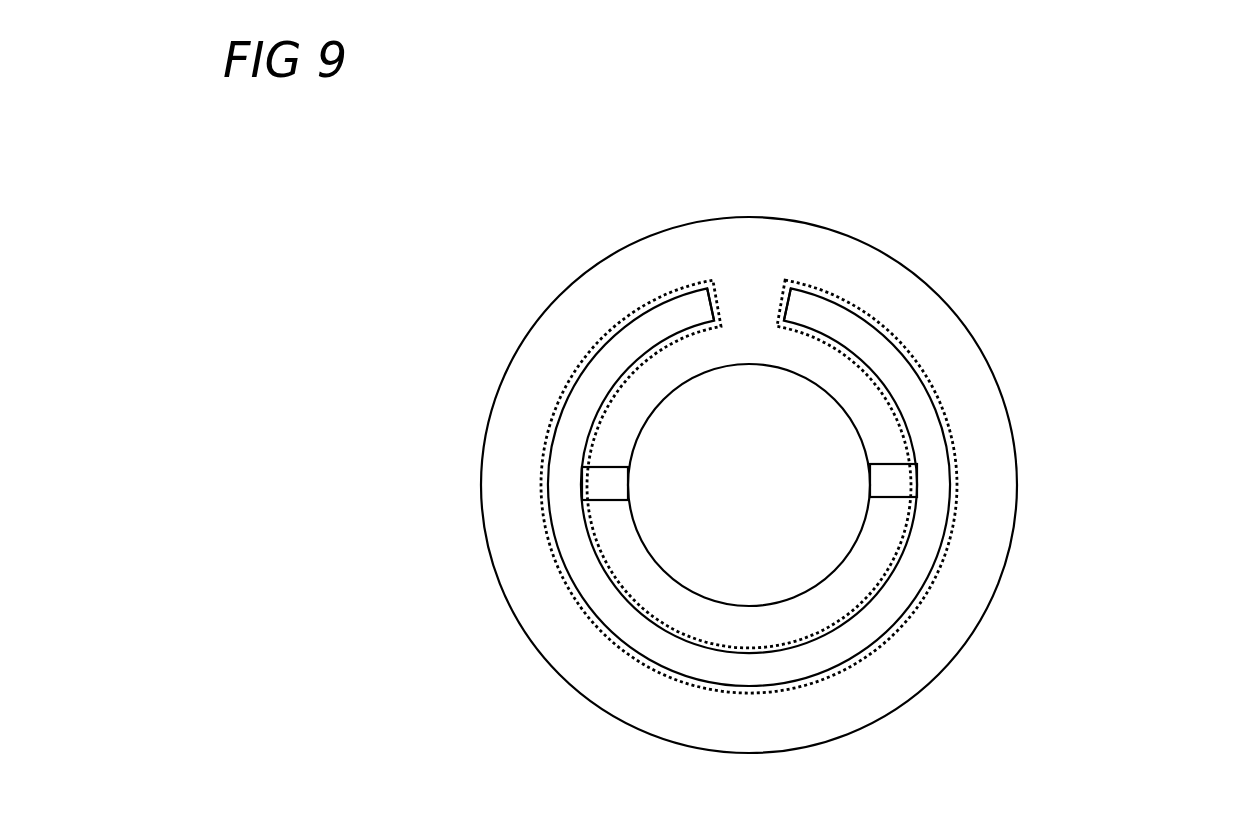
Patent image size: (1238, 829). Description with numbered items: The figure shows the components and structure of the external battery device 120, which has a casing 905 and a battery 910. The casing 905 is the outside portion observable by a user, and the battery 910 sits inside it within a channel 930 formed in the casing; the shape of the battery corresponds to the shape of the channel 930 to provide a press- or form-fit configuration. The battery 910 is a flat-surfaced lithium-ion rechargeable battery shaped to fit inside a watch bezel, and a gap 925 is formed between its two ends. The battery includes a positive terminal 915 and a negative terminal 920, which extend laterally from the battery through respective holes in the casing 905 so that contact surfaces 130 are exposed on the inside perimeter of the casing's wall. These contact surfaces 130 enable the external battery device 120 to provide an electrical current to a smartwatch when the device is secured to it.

The external battery device 120 is at (955, 182).
The casing 905 is at (1015, 473).
The battery 910 is at (862, 312).
The channel 930 is at (917, 358).
The gap 925 is at (745, 202).
The contact surfaces 130 is at (868, 485).
The negative terminal 920 is at (607, 480).
The positive terminal 915 is at (895, 480).